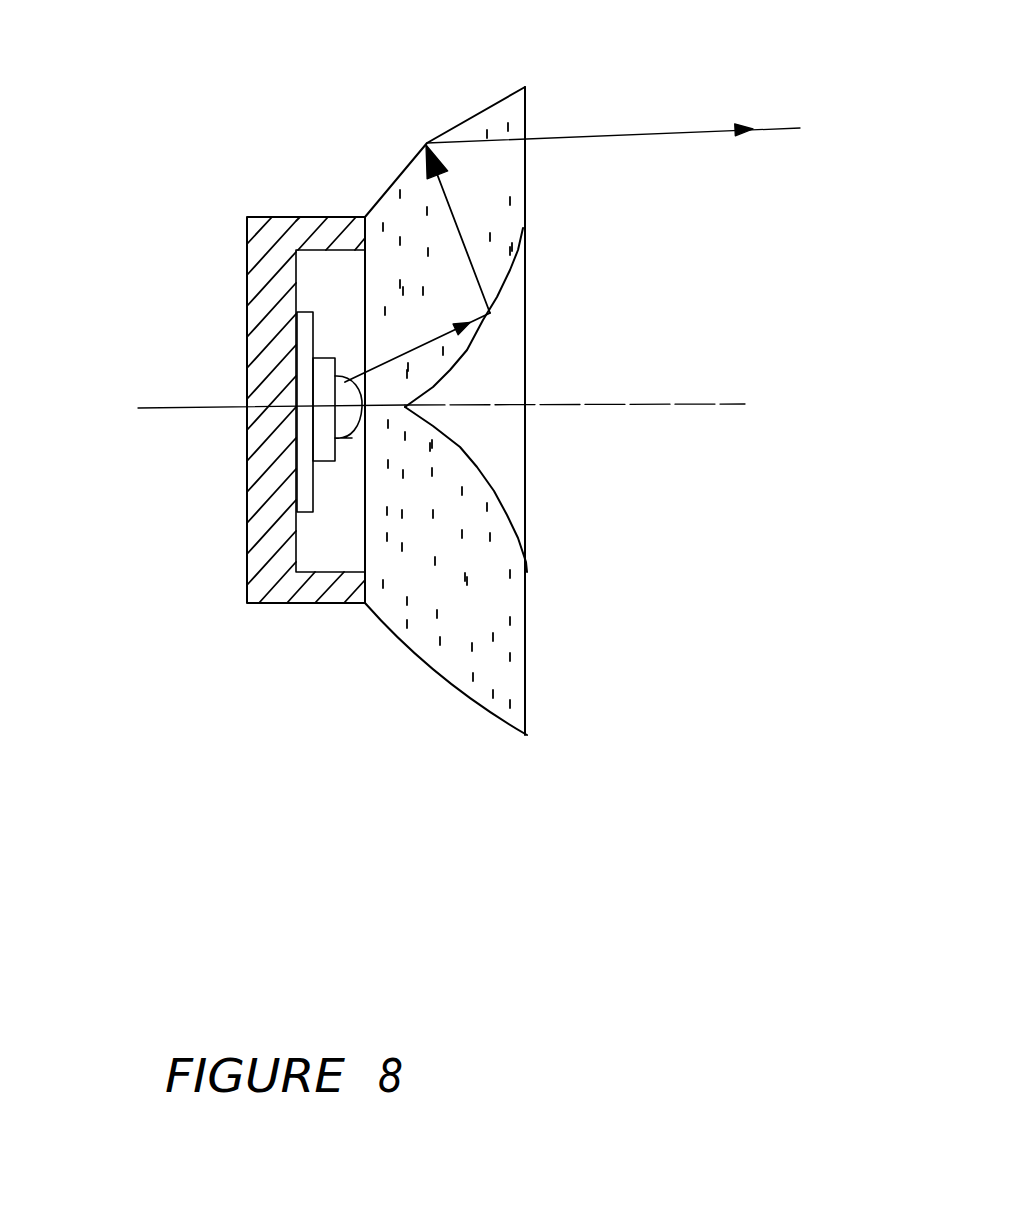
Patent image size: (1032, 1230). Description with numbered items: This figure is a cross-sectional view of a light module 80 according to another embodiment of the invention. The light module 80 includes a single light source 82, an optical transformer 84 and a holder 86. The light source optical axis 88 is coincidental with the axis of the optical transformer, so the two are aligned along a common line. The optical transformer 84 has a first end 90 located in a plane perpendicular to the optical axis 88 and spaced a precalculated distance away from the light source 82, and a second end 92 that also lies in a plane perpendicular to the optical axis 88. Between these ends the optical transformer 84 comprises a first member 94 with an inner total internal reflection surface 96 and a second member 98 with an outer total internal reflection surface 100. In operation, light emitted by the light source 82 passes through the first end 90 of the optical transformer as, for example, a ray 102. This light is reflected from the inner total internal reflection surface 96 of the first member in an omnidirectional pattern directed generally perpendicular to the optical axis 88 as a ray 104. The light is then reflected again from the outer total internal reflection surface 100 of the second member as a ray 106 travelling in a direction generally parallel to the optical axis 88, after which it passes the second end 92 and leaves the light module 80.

The light module 80 is at (333, 187).
The light source 82 is at (352, 399).
The optical transformer 84 is at (532, 737).
The holder 86 is at (247, 598).
The light source optical axis 88 is at (469, 402).
The first end 90 is at (367, 540).
The second end 92 is at (528, 673).
The first member 94 is at (487, 433).
The inner total internal reflection surface 96 is at (463, 355).
The second member 98 is at (490, 198).
The outer total internal reflection surface 100 is at (525, 95).
The ray 102 is at (417, 344).
The ray 104 is at (457, 223).
The ray 106 is at (748, 115).